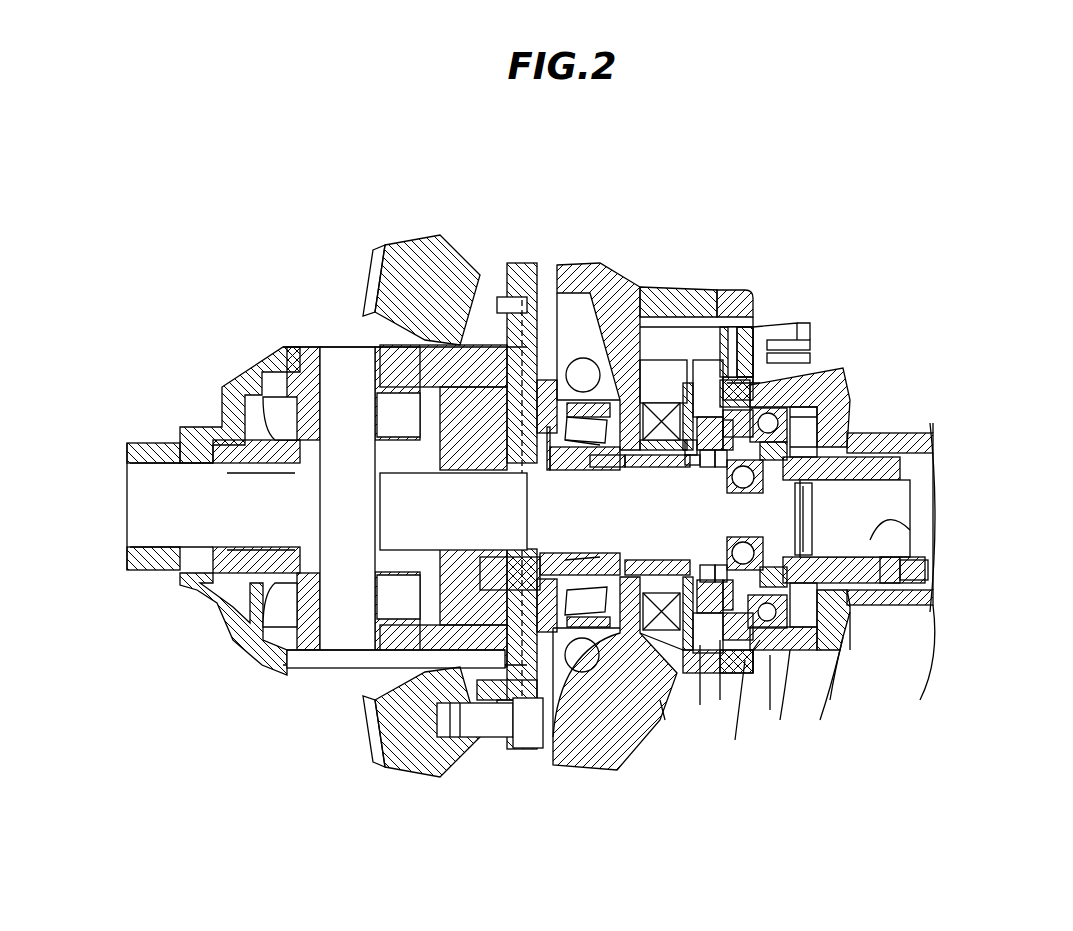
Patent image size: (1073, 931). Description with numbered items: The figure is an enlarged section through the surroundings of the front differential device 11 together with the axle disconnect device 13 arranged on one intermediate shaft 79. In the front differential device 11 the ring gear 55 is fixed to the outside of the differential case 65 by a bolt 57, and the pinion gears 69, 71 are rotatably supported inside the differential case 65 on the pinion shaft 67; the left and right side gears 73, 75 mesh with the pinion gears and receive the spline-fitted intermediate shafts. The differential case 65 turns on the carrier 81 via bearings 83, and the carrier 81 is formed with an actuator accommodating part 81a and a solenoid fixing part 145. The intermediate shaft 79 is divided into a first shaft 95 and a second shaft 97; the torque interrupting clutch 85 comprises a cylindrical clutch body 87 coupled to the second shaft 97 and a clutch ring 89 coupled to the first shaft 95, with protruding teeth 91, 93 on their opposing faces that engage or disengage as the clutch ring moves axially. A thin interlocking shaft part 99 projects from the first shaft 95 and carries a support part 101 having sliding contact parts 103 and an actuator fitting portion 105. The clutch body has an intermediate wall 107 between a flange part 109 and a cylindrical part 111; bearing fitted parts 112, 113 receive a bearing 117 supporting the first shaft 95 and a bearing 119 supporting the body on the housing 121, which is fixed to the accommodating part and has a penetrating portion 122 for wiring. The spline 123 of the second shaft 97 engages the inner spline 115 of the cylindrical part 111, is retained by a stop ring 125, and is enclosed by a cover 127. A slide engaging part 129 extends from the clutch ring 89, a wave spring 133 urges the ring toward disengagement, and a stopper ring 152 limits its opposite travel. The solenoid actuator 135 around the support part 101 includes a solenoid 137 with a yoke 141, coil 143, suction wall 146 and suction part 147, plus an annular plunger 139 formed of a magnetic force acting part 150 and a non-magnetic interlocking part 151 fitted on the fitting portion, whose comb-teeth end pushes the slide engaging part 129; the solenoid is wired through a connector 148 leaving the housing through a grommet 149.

The front differential device 11 is at (302, 340).
The axle disconnect device 13 is at (757, 291).
The ring gear 55 is at (400, 258).
The bolt 57 is at (470, 728).
The differential case 65 is at (262, 370).
The pinion shaft 67 is at (343, 362).
The pinion gear 69 is at (292, 362).
The pinion gear 71 is at (282, 660).
The side gear 73 is at (240, 590).
The side gear 75 is at (333, 690).
The intermediate shaft 79 is at (942, 505).
The carrier 81 is at (610, 748).
The actuator accommodating part 81a is at (705, 415).
The bearing 83 is at (640, 738).
The torque interrupting clutch 85 is at (720, 415).
The cylindrical clutch body 87 is at (812, 460).
The clutch ring 89 is at (713, 415).
The protruding teeth 91 is at (747, 660).
The protruding teeth 93 is at (720, 700).
The first shaft 95 is at (546, 487).
The second shaft 97 is at (925, 455).
The interlocking shaft part 99 is at (843, 630).
The support part 101 is at (700, 700).
The sliding contact part 103 is at (695, 415).
The actuator fitting portion 105 is at (612, 330).
The intermediate wall 107 is at (873, 602).
The flange part 109 is at (843, 368).
The cylindrical part 111 is at (883, 437).
The bearing fitted part 112 is at (893, 498).
The bearing fitted part 113 is at (847, 410).
The inner spline 115 is at (905, 545).
The bearing 117 is at (763, 545).
The bearing 119 is at (790, 653).
The housing 121 is at (770, 657).
The penetrating portion 122 is at (810, 337).
The spline 123 is at (930, 580).
The stop ring 125 is at (850, 613).
The cover 127 is at (845, 645).
The slide engaging part 129 is at (702, 572).
The wave spring 133 is at (716, 565).
The solenoid actuator 135 is at (625, 340).
The solenoid 137 is at (652, 400).
The plunger 139 is at (640, 562).
The yoke 141 is at (612, 558).
The coil 143 is at (675, 700).
The solenoid fixing part 145 is at (660, 715).
The suction wall 146 is at (692, 468).
The suction part 147 is at (688, 460).
The connector 148 is at (803, 352).
The grommet 149 is at (733, 317).
The magnetic force acting part 150 is at (646, 470).
The interlocking part 151 is at (616, 470).
The stopper ring 152 is at (546, 478).